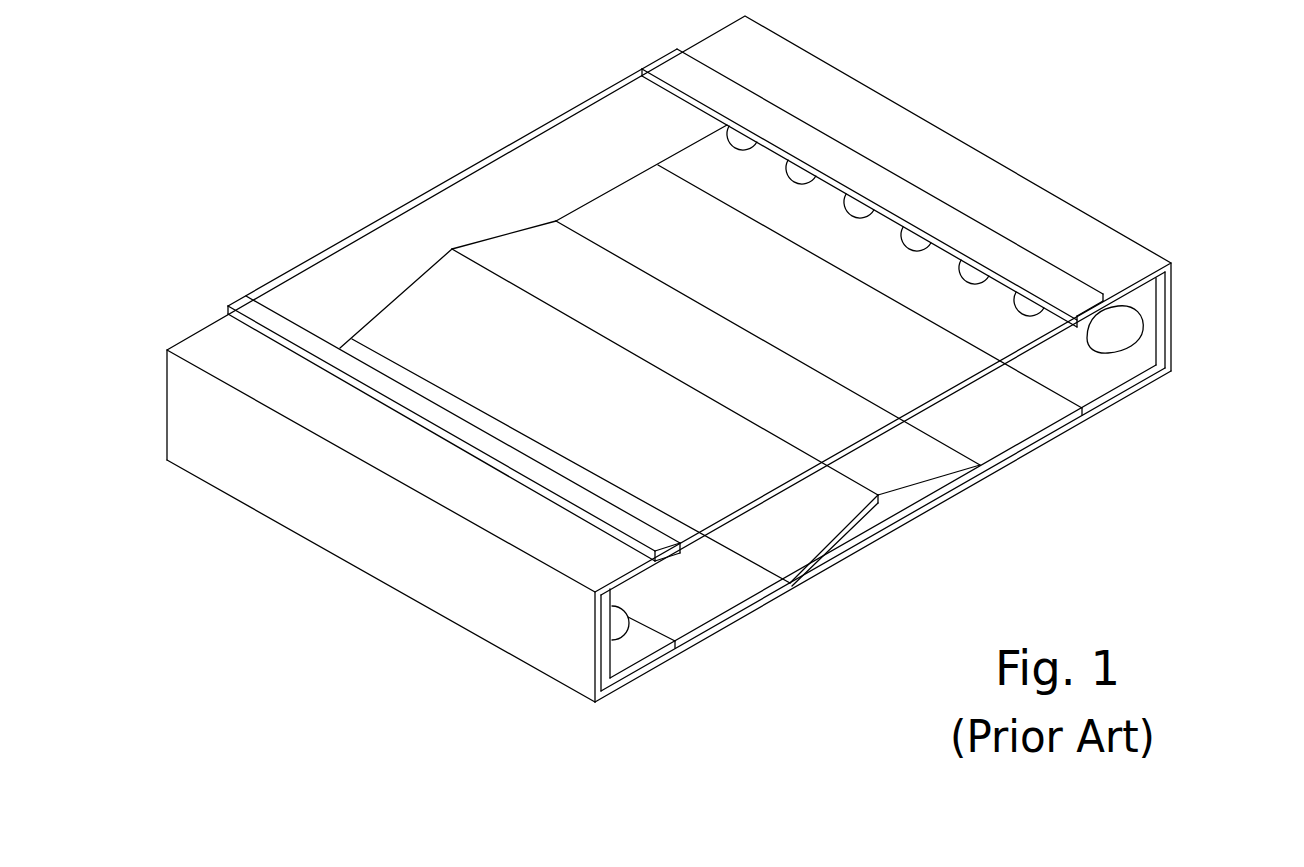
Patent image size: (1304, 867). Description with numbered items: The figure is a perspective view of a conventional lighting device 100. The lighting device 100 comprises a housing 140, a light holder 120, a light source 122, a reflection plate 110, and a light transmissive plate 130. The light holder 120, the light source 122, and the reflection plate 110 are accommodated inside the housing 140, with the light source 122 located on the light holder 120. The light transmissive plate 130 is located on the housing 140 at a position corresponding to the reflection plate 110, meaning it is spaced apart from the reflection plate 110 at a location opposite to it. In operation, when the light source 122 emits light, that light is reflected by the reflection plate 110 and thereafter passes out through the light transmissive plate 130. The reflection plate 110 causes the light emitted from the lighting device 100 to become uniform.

The lighting device 100 is at (257, 96).
The reflection plate 110 is at (905, 465).
The light holder 120 is at (1145, 300).
The light source 122 is at (1125, 322).
The light transmissive plate 130 is at (583, 128).
The housing 140 is at (795, 68).